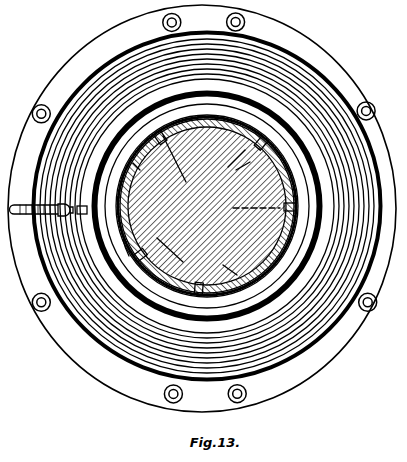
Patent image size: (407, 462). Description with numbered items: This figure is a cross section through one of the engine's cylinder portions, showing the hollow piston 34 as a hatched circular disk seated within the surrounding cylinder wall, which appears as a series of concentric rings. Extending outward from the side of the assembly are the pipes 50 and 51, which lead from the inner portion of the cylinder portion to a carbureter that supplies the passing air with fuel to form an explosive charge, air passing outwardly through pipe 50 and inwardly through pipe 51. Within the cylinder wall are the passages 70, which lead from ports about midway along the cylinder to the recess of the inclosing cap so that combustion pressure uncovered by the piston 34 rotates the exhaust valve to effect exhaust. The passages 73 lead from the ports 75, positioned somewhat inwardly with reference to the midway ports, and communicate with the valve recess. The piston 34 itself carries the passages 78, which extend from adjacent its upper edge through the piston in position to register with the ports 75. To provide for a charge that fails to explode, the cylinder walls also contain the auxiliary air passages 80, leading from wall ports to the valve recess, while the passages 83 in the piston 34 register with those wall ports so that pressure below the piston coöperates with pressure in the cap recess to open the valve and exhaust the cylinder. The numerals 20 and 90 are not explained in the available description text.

The valve body 20 is at (133, 247).
The piston 34 is at (124, 266).
The pipe 50 is at (24, 215).
The pipe 51 is at (81, 215).
The passages 70 is at (243, 146).
The passages 73 is at (165, 136).
The ports 75 is at (292, 211).
The passages 78 is at (193, 133).
The auxiliary air passages 80 is at (250, 151).
The passages 83 is at (133, 163).
The sleeve 90 is at (128, 186).